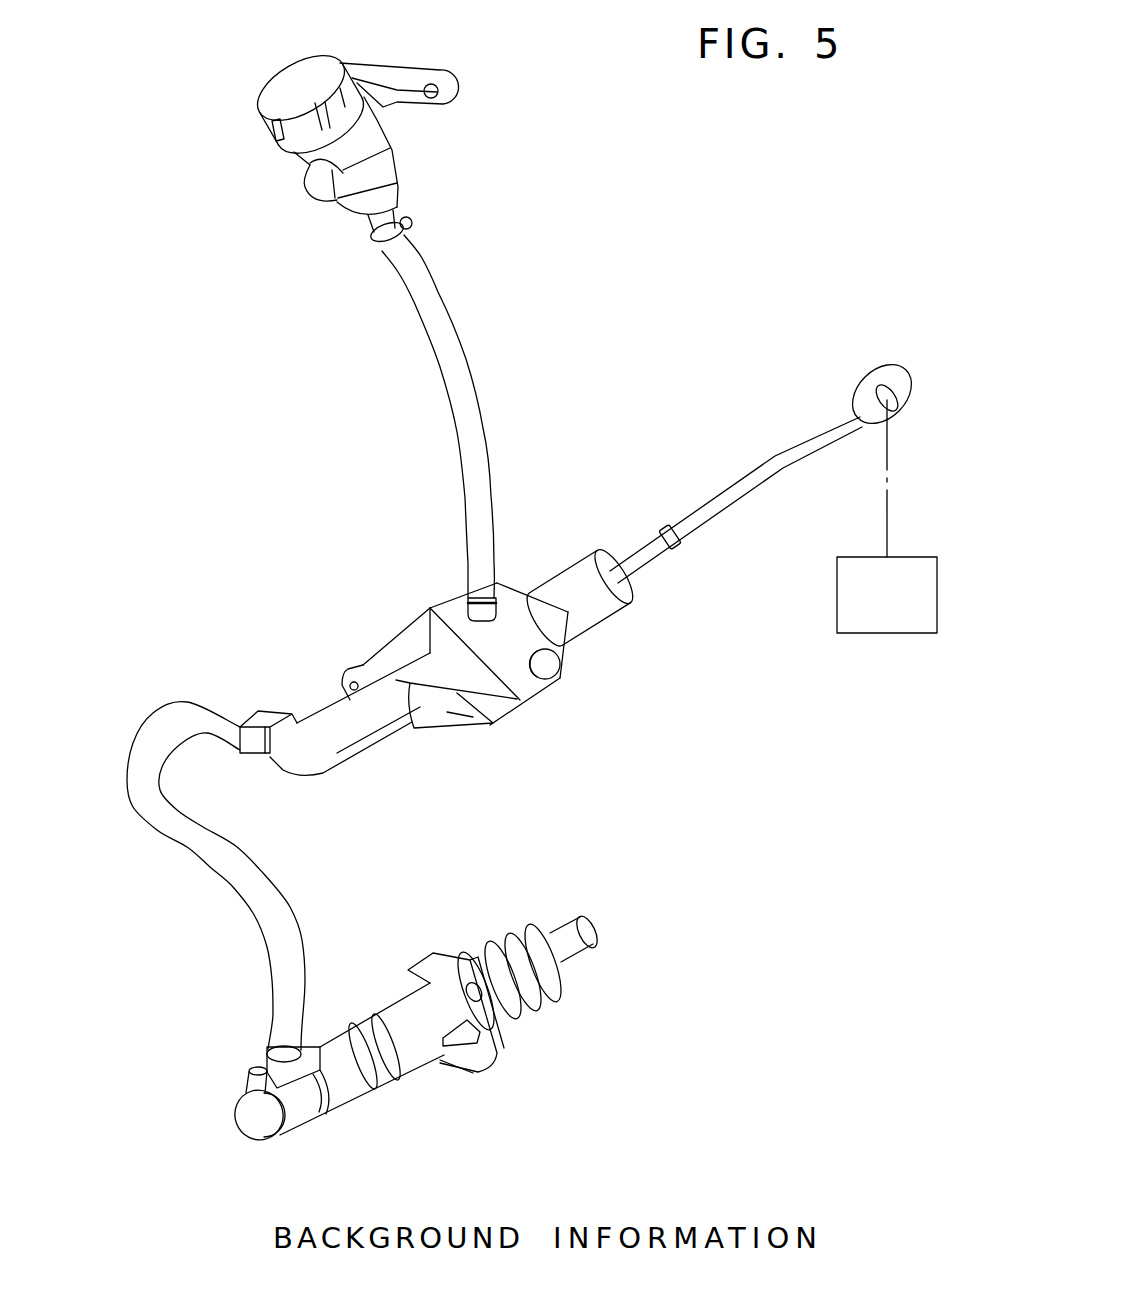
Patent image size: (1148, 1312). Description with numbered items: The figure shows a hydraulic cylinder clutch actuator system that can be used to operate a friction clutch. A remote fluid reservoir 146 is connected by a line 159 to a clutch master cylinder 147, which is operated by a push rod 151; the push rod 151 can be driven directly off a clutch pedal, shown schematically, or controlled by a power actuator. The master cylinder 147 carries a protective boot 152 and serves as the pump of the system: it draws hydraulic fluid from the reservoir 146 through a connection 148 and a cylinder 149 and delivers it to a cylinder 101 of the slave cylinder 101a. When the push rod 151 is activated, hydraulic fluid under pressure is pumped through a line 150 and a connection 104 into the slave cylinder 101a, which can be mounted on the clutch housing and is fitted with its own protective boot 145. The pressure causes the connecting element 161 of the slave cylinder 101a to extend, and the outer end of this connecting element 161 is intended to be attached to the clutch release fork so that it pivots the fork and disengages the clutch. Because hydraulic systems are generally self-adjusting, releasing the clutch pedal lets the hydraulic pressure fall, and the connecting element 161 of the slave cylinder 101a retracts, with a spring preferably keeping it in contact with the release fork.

The remote fluid reservoir 146 is at (385, 141).
The line 159 is at (440, 297).
The clutch master cylinder 147 is at (517, 556).
The connection 148 is at (470, 598).
The cylinder 149 is at (338, 714).
The protective boot 152 is at (598, 597).
The push rod 151 is at (778, 462).
The line 150 is at (207, 865).
The cylinder 101 is at (347, 1040).
The connection 104 is at (267, 1057).
The protective boot 145 is at (520, 950).
The connecting element 161 is at (588, 956).
The slave cylinder 101a is at (601, 910).